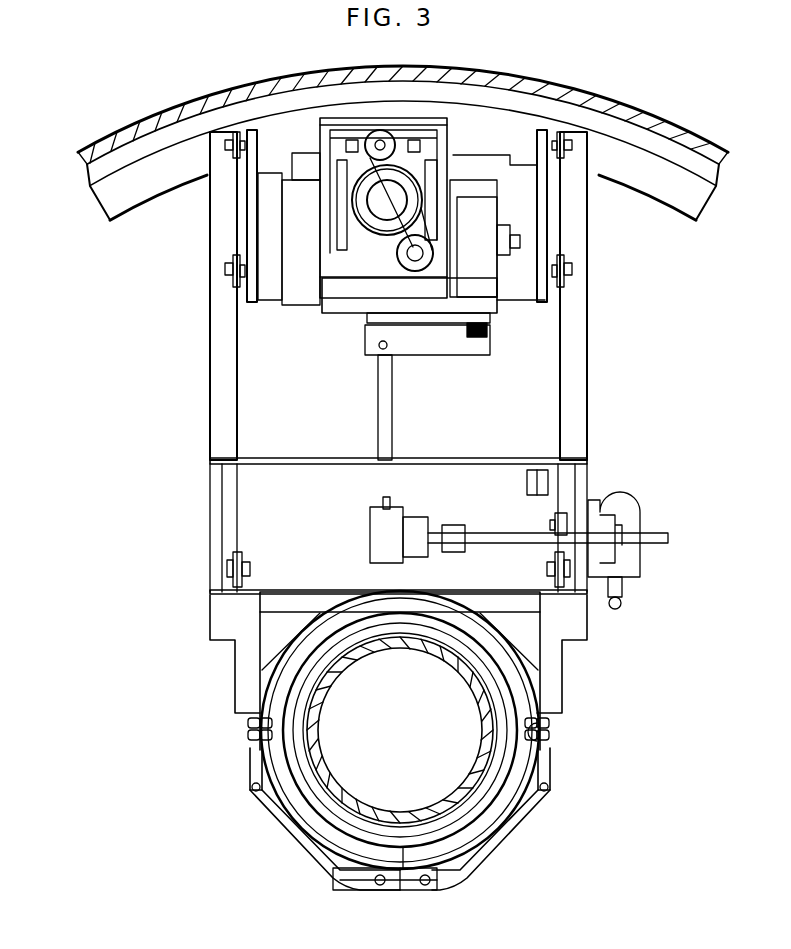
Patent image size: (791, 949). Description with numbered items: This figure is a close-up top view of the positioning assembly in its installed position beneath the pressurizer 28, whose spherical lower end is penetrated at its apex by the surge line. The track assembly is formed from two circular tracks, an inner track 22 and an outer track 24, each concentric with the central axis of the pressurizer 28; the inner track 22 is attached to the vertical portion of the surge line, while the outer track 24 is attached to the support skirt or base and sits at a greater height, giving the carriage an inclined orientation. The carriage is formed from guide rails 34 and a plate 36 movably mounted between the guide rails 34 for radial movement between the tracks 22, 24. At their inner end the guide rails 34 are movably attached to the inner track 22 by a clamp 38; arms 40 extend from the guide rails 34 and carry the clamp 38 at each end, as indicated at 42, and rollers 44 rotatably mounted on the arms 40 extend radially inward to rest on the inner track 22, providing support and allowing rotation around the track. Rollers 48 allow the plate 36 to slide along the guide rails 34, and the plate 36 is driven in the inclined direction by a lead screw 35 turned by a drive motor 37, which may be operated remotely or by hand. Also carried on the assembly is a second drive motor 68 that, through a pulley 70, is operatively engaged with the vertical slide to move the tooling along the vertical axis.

The inner track 22 is at (467, 840).
The outer track 24 is at (122, 207).
The pressurizer 28 is at (153, 120).
The guide rails 34 is at (210, 305).
The lead screw 35 is at (378, 378).
The plate 36 is at (252, 302).
The drive motor 37 is at (640, 500).
The clamp 38 is at (313, 858).
The arms 40 is at (236, 668).
The clamp attachment 42 is at (250, 788).
The rollers 44 is at (255, 747).
The rollers 48 is at (235, 253).
The drive motor 68 is at (409, 316).
The pulley 70 is at (380, 213).